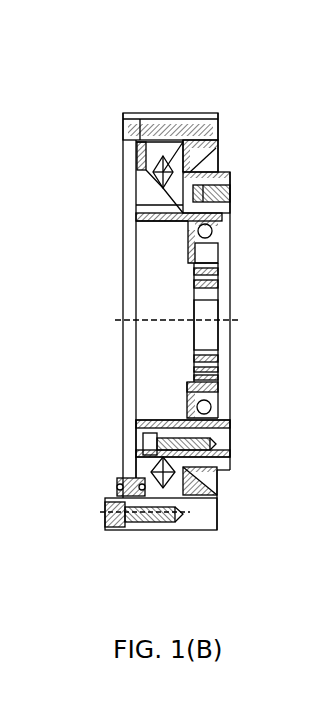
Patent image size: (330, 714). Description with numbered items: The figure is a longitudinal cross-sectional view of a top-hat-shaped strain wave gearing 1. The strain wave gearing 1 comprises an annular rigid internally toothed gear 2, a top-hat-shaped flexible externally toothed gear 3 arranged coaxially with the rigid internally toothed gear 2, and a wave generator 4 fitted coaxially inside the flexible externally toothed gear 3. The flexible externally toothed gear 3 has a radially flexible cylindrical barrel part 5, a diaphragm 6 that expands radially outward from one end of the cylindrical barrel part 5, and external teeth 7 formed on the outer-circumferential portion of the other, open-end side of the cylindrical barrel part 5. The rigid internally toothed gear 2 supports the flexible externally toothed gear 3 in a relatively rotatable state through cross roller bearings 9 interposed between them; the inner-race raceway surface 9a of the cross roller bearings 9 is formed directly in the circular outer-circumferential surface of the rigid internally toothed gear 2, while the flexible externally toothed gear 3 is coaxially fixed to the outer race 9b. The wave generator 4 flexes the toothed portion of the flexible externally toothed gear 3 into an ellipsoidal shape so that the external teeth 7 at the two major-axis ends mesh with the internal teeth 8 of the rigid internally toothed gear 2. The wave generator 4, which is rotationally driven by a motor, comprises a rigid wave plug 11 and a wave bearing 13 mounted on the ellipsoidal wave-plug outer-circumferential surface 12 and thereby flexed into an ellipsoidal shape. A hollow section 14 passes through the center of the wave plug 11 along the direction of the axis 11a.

The strain wave gearing 1 is at (217, 70).
The rigid internally toothed gear 2 is at (150, 192).
The flexible externally toothed gear 3 is at (145, 248).
The wave generator 4 is at (297, 335).
The cylindrical barrel part 5 is at (155, 232).
The diaphragm 6 is at (140, 205).
The external teeth 7 is at (207, 211).
The internal teeth 8 is at (212, 231).
The cross roller bearings 9 is at (128, 136).
The inner-race raceway surface 9a is at (156, 145).
The outer race 9b is at (190, 150).
The wave plug 11 is at (230, 382).
The axis 11a is at (233, 318).
The wave-plug outer-circumferential surface 12 is at (228, 433).
The wave bearing 13 is at (230, 411).
The hollow section 14 is at (195, 325).